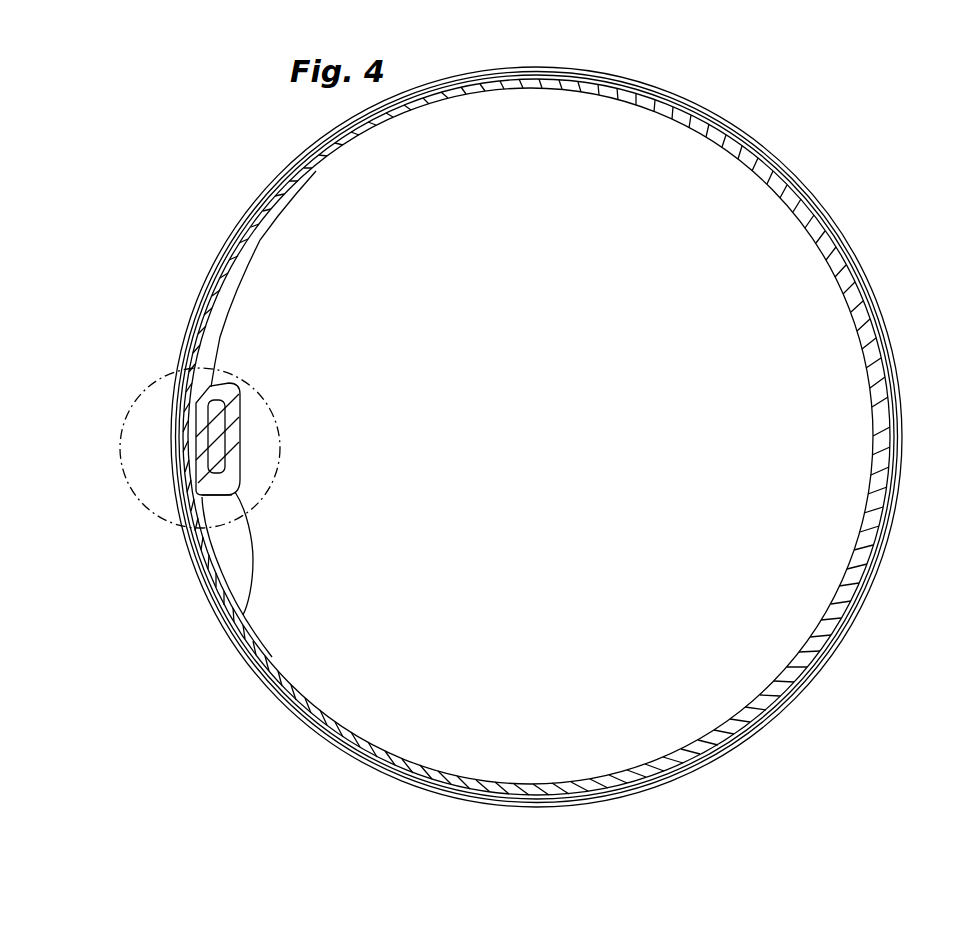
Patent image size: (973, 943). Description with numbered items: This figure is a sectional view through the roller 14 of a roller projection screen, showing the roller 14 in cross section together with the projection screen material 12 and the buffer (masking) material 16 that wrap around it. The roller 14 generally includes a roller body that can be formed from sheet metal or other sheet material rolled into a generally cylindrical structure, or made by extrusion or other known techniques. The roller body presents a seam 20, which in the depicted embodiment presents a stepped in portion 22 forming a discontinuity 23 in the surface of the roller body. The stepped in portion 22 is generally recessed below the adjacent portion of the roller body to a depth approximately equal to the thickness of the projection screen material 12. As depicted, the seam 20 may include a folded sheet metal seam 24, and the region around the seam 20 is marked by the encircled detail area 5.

The detail region 5 is at (147, 381).
The projection screen material 12 is at (903, 418).
The roller 14 is at (853, 322).
The buffer (masking) material 16 is at (196, 582).
The seam 20 is at (222, 330).
The stepped in portion 22 is at (175, 463).
The discontinuity 23 is at (190, 476).
The folded sheet metal seam 24 is at (240, 618).